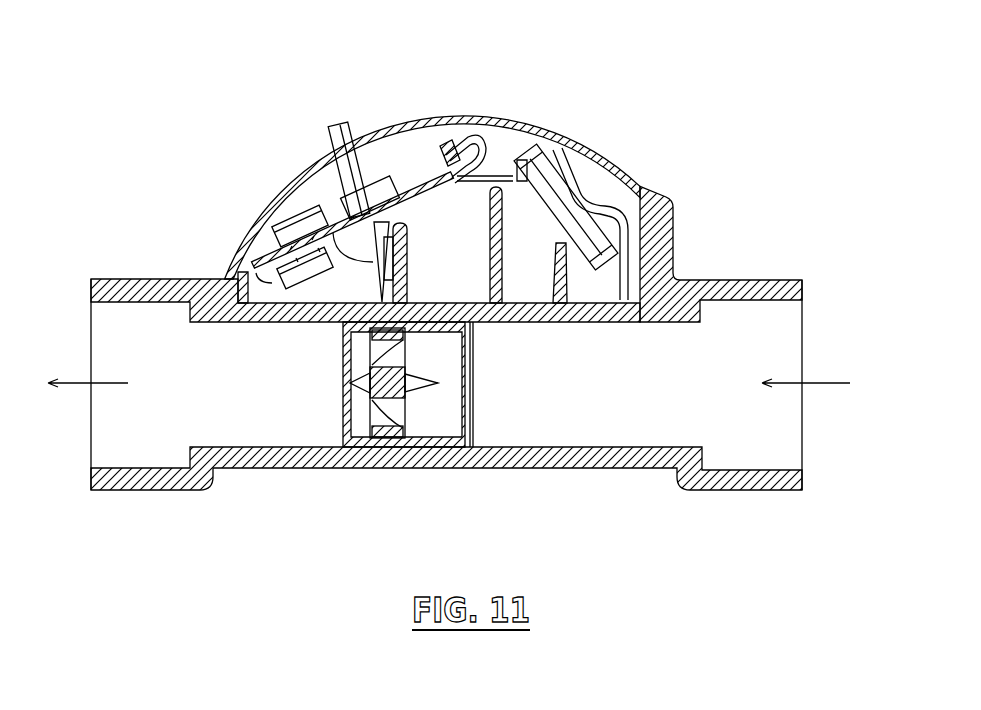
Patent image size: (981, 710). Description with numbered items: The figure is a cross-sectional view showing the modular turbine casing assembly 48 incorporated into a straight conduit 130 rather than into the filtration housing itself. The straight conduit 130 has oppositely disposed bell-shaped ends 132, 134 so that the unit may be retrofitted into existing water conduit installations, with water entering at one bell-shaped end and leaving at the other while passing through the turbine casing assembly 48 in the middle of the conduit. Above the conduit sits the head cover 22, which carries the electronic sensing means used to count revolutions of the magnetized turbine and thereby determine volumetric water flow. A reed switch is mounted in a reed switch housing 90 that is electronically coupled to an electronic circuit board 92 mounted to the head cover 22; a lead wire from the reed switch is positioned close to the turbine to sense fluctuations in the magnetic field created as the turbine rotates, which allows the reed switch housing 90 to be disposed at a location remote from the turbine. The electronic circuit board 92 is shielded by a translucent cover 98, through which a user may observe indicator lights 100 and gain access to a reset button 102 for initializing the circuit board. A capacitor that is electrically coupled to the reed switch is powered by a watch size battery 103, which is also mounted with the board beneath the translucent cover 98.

The head cover 22 is at (677, 237).
The modular turbine casing assembly 48 is at (434, 470).
The reed switch housing 90 is at (300, 165).
The electronic circuit board 92 is at (243, 237).
The translucent cover 98 is at (600, 143).
The indicator lights 100 is at (455, 120).
The reset button 102 is at (330, 122).
The watch size battery 103 is at (610, 205).
The straight conduit 130 is at (633, 469).
The bell-shaped end 132 is at (773, 280).
The bell-shaped end 134 is at (123, 490).